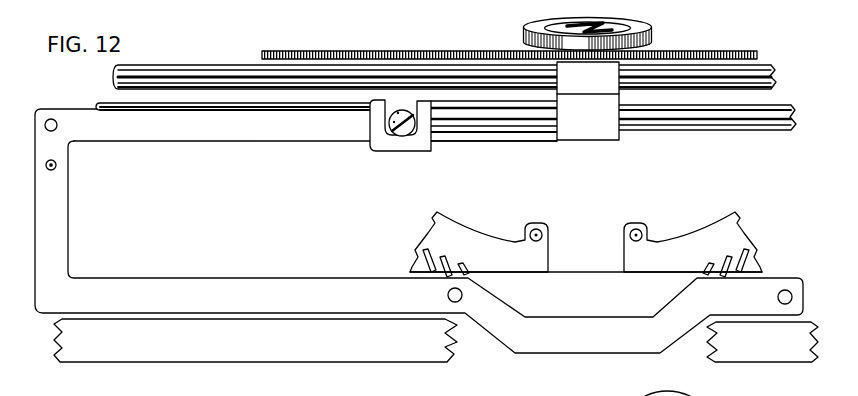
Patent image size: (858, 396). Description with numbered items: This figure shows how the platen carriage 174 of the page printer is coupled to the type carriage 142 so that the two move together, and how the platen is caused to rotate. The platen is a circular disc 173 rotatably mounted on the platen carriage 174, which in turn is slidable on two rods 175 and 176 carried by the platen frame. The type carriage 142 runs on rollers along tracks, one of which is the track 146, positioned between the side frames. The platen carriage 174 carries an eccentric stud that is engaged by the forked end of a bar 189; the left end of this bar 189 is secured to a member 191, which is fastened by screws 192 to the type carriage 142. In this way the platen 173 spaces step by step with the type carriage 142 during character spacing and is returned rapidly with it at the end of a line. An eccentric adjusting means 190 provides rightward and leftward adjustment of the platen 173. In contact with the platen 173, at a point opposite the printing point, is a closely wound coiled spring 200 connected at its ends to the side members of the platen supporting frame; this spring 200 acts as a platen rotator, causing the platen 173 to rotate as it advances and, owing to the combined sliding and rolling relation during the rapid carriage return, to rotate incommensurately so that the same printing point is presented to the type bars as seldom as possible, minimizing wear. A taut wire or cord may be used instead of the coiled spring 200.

The type carriage 142 is at (754, 242).
The track 146 is at (368, 352).
The circular disc platen 173 is at (652, 38).
The platen carriage 174 is at (573, 138).
The rod 175 is at (763, 124).
The rod 176 is at (757, 72).
The bar 189 is at (268, 141).
The eccentric adjusting means 190 is at (412, 128).
The member 191 is at (60, 223).
The screws 192 is at (449, 291).
The coiled spring platen rotator 200 is at (440, 52).